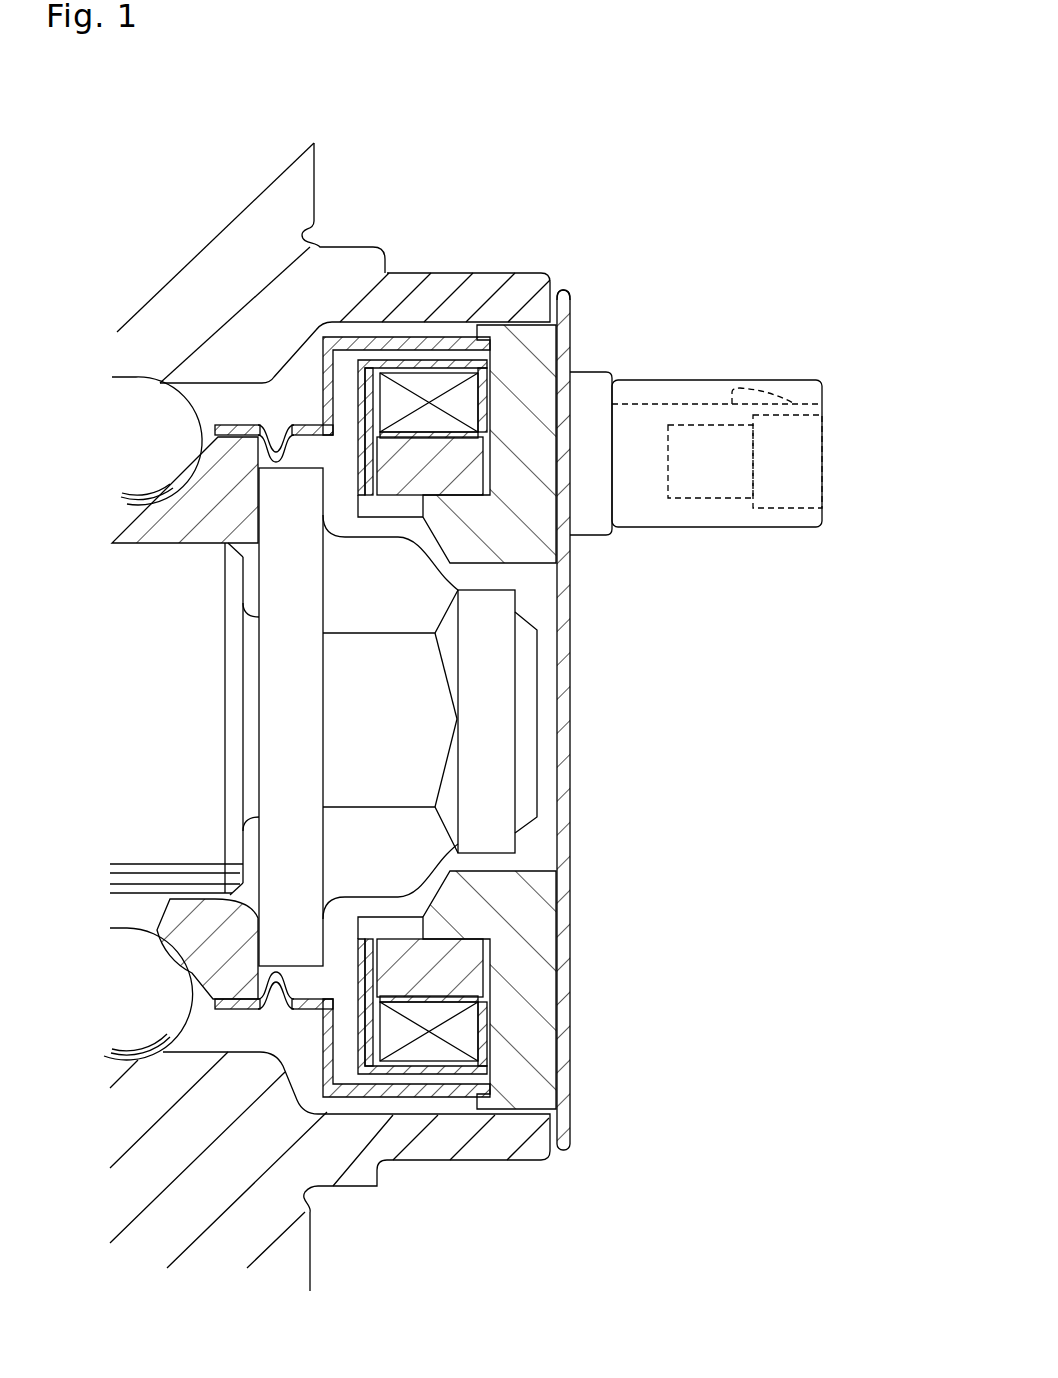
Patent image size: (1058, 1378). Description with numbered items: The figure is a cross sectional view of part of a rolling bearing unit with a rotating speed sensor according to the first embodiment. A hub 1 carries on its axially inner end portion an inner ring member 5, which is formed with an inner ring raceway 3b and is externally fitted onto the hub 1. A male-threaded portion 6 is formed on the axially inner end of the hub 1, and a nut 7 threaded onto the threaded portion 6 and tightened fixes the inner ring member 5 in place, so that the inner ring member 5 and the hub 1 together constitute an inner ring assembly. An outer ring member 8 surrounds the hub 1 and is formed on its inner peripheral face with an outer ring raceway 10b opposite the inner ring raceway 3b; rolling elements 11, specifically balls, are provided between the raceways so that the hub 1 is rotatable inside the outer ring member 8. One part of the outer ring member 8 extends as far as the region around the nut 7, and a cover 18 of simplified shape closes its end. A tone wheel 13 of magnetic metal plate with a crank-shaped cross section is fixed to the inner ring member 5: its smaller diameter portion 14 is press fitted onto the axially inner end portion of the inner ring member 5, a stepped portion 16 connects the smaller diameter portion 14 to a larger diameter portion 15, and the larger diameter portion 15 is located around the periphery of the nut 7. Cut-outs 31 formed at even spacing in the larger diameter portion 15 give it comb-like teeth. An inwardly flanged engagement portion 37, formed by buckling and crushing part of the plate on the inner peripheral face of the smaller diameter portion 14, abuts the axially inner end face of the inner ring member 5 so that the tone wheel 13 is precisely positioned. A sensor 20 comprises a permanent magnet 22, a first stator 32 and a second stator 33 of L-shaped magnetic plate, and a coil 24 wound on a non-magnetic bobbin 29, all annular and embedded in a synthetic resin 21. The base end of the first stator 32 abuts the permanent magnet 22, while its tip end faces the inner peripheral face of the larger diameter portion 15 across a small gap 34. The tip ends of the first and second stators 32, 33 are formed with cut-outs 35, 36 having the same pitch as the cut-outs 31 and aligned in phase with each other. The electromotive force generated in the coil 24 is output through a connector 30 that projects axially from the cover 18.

The hub 1 is at (140, 692).
The inner ring raceway 3b is at (153, 933).
The inner ring member 5 is at (155, 538).
The male-threaded portion 6 is at (252, 707).
The nut 7 is at (410, 663).
The outer ring member 8 is at (260, 1242).
The outer ring raceway 10b is at (126, 1052).
The rolling elements 11 is at (139, 377).
The tone wheel 13 is at (247, 424).
The smaller diameter portion 14 is at (227, 424).
The larger diameter portion 15 is at (347, 340).
The stepped portion 16 is at (323, 1040).
The cover 18 is at (571, 797).
The sensor 20 is at (487, 330).
The synthetic resin 21 is at (543, 1088).
The permanent magnet 22 is at (480, 957).
The coil 24 is at (463, 1037).
The bobbin 29 is at (490, 395).
The connector 30 is at (688, 522).
The cut-outs 31 is at (430, 385).
The first stator 32 is at (360, 440).
The second stator 33 is at (487, 1003).
The small gap 34 is at (465, 340).
The cut-outs 35 is at (378, 345).
The cut-outs 36 is at (556, 345).
The flange portion 37 is at (253, 442).